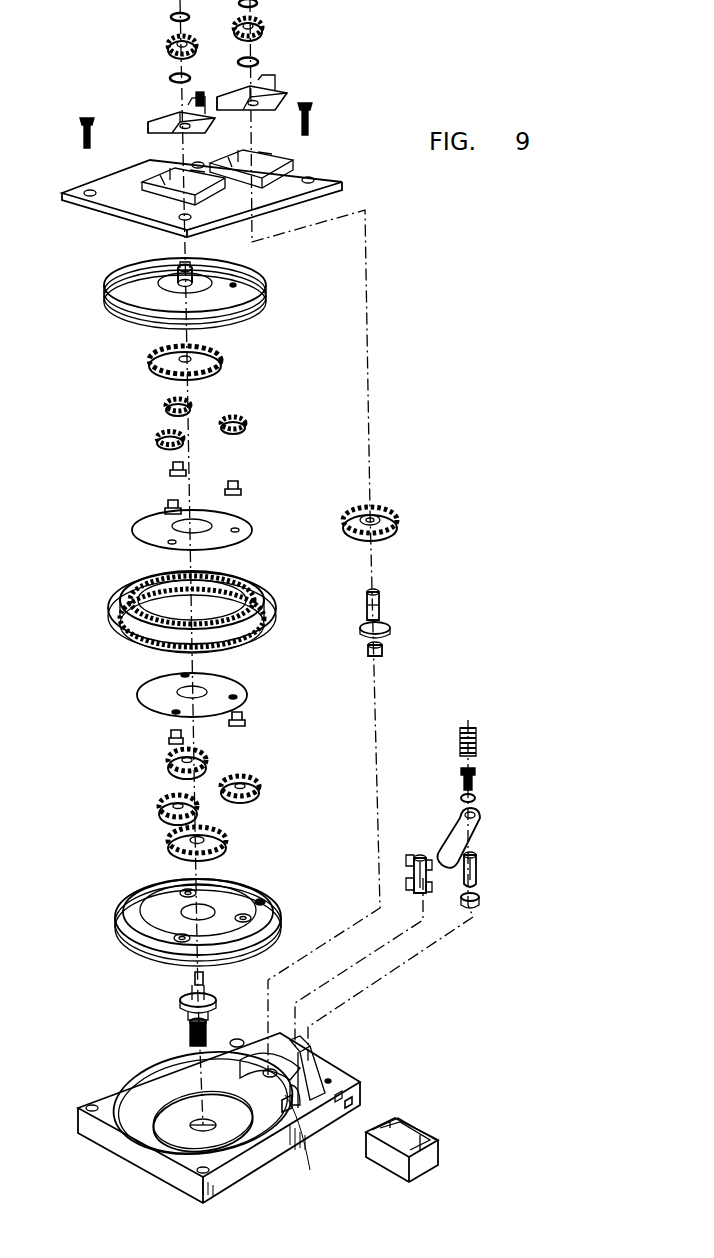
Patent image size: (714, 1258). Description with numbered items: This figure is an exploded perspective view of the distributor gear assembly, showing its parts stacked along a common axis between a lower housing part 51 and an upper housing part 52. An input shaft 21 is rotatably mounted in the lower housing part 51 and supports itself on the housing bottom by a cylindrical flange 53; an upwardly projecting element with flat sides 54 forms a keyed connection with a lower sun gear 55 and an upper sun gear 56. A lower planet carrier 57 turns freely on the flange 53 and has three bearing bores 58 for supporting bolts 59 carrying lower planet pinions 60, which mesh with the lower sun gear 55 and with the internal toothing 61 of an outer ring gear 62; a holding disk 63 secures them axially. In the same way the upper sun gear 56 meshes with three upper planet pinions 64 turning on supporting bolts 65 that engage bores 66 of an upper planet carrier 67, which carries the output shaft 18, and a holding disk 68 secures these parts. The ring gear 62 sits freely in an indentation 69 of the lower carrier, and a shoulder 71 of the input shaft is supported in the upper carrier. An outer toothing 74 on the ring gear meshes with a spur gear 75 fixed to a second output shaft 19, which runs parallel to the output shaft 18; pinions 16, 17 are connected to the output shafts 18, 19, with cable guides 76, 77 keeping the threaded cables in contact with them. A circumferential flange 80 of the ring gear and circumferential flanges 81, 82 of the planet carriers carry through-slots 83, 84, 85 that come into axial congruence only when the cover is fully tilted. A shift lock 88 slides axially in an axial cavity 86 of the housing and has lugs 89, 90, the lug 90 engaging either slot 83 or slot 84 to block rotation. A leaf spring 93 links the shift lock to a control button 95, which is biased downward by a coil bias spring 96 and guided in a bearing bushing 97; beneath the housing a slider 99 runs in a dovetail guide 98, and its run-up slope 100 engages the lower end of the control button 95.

The pinion 16 is at (168, 46).
The pinion 17 is at (265, 28).
The output shaft 18 is at (178, 272).
The output shaft 19 is at (385, 615).
The input shaft 21 is at (190, 1035).
The lower housing part 51 is at (115, 1145).
The upper housing part 52 is at (80, 207).
The cylindrical flange 53 is at (216, 1006).
The element with flat sides 54 is at (183, 1002).
The lower sun gear 55 is at (170, 848).
The upper sun gear 56 is at (152, 372).
The lower planet carrier 57 is at (150, 905).
The bearing bores 58 is at (180, 940).
The supporting bolts 59 is at (168, 738).
The lower planet pinions 60 is at (262, 790).
The internal toothing 61 is at (150, 585).
The outer ring gear 62 is at (112, 645).
The holding disk 63 is at (150, 698).
The upper planet pinions 64 is at (246, 423).
The supporting bolts 65 is at (246, 490).
The bores 66 is at (165, 300).
The upper planet carrier 67 is at (125, 297).
The holding disk 68 is at (140, 525).
The indentation 69 is at (262, 900).
The shoulder 71 is at (203, 978).
The outer toothing 74 is at (265, 610).
The spur gear 75 is at (400, 520).
The cable guide 76 is at (160, 120).
The cable guide 77 is at (282, 88).
The circumferential flange 80 is at (110, 628).
The circumferential flange 81 is at (118, 920).
The circumferential flange 82 is at (108, 292).
The through-slot 83 is at (268, 625).
The through-slot 84 is at (272, 930).
The through-slot 85 is at (262, 292).
The axial cavity 86 is at (296, 1112).
The shift lock 88 is at (428, 893).
The lug 89 is at (412, 860).
The lug 90 is at (412, 892).
The leaf spring 93 is at (470, 828).
The control button 95 is at (478, 868).
The bias spring 96 is at (480, 740).
The bearing bushing 97 is at (480, 900).
The dovetail guide 98 is at (360, 1102).
The slider 99 is at (388, 1158).
The run-up slope 100 is at (410, 1135).